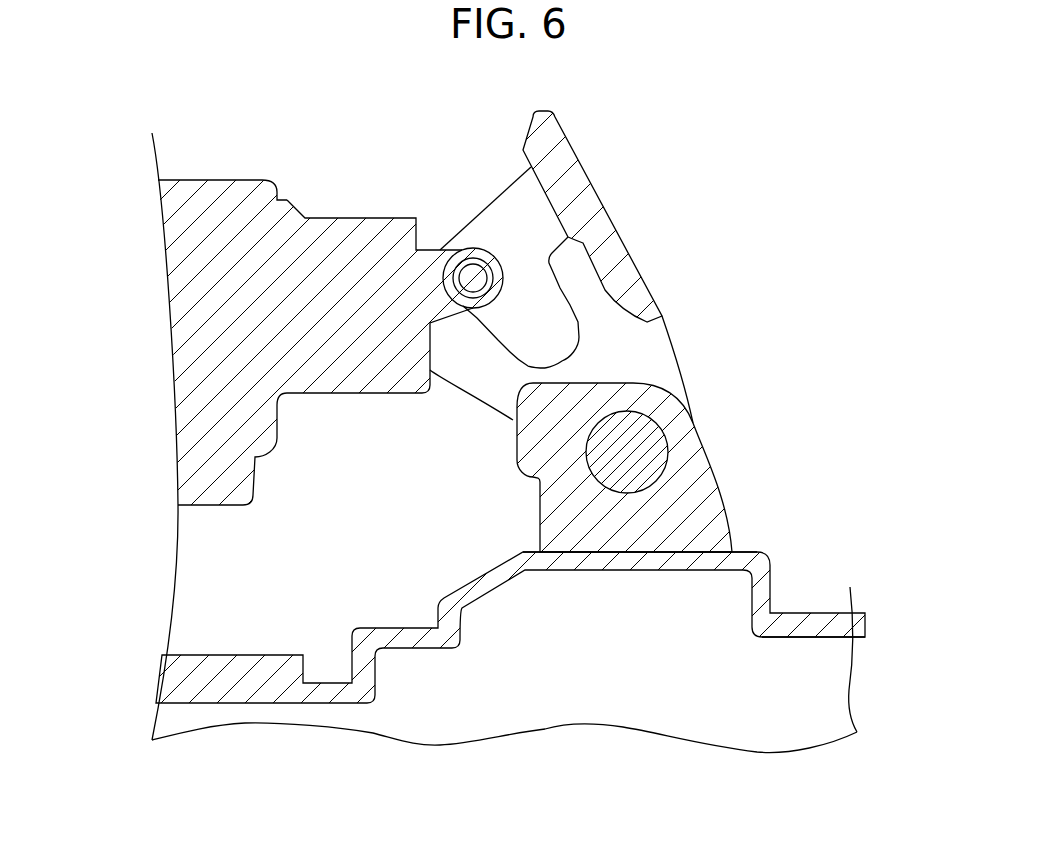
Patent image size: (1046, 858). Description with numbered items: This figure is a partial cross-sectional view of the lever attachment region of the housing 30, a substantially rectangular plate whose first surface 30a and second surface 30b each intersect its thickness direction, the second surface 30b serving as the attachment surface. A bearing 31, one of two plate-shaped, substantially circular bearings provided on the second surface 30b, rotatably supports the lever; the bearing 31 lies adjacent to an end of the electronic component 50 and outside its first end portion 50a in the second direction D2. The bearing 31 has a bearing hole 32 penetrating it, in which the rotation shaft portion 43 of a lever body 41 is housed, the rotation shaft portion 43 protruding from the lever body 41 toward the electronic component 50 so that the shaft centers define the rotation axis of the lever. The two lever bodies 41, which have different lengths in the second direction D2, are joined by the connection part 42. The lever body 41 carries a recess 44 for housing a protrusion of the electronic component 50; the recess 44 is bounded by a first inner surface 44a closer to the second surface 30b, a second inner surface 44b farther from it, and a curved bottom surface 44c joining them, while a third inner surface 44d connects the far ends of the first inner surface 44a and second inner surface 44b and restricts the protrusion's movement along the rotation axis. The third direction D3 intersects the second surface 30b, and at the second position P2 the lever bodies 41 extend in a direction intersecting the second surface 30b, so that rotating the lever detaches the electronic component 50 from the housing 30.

The housing 30 is at (810, 627).
The first surface 30a is at (815, 650).
The second surface 30b is at (752, 545).
The bearing 31 is at (692, 518).
The bearing hole 32 is at (645, 495).
The lever body 41 is at (643, 367).
The connection part 42 is at (587, 223).
The rotation shaft portion 43 is at (640, 453).
The recess 44 is at (580, 345).
The first inner surface 44a is at (562, 277).
The second inner surface 44b is at (488, 347).
The curved bottom surface 44c is at (566, 363).
The third inner surface 44d is at (527, 210).
The electronic component 50 is at (233, 200).
The first end portion 50a is at (357, 270).
The second position P2 is at (602, 122).
The second direction D2 is at (602, 807).
The third direction D3 is at (113, 353).